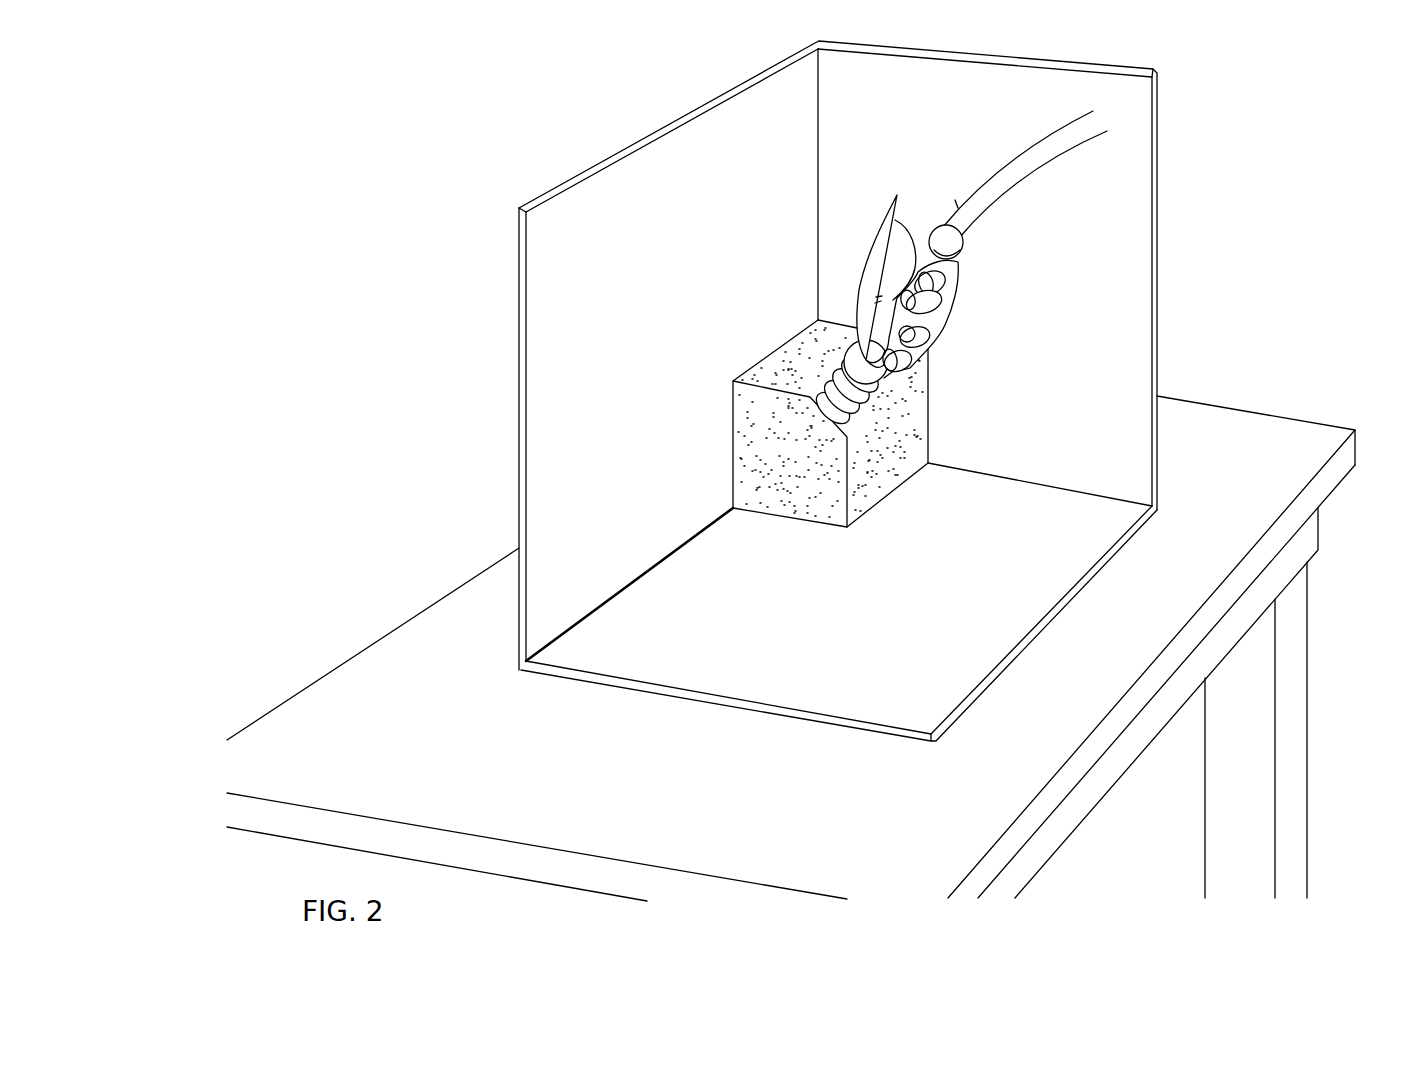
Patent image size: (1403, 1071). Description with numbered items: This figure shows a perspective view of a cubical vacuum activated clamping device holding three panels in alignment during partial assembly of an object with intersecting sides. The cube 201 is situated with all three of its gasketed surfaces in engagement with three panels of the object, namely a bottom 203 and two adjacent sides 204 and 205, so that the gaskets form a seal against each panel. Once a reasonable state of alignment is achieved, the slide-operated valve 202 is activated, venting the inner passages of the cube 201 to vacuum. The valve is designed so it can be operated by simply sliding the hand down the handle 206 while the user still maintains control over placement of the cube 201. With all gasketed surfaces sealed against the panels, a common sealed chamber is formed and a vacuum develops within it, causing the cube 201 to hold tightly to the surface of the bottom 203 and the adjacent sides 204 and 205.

The cube 201 is at (738, 437).
The slide-operated valve 202 is at (843, 365).
The bottom 203 is at (875, 731).
The adjacent side 204 is at (519, 348).
The adjacent side 205 is at (1161, 203).
The handle 206 is at (950, 275).